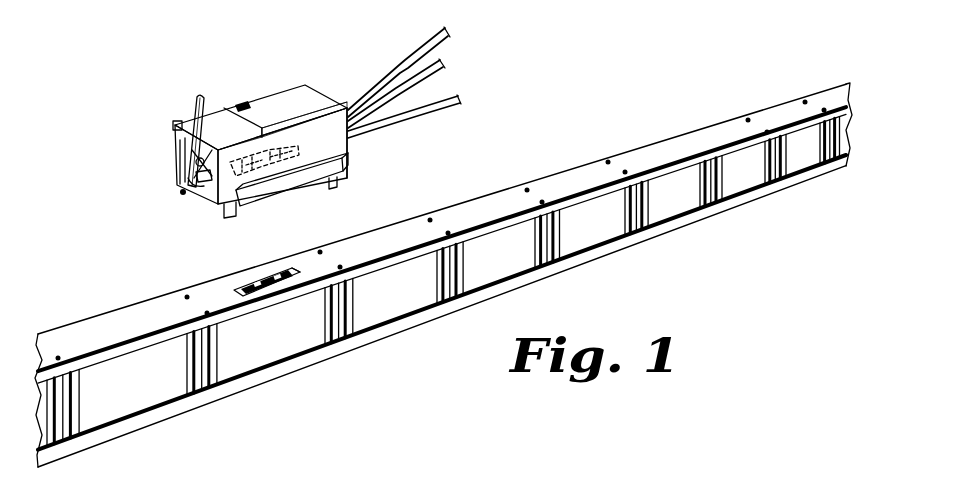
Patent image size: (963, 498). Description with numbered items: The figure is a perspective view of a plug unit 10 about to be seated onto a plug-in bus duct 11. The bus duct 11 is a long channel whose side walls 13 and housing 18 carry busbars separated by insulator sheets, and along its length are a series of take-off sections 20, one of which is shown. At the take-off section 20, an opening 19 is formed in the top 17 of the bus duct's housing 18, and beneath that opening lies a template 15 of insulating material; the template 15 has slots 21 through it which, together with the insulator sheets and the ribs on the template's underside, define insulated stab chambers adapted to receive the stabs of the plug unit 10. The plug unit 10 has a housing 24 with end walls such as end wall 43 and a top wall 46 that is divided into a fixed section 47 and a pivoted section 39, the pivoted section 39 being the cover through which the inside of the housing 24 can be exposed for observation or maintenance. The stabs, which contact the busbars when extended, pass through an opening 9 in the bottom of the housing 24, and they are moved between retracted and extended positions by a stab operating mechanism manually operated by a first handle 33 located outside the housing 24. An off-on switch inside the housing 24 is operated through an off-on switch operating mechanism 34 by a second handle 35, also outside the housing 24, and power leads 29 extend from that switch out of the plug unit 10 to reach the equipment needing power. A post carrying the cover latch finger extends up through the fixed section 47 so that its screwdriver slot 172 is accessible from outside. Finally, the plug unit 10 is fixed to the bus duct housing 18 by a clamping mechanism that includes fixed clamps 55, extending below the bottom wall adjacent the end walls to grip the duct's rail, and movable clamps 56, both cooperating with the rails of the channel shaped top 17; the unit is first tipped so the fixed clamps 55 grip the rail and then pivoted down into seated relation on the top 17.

The plug unit 10 is at (278, 50).
The screwdriver slot 172 is at (239, 127).
The pivoted section 39 is at (311, 92).
The fixed section 47 is at (218, 115).
The top wall 46 is at (283, 96).
The second handle 35 is at (202, 108).
The end wall 43 is at (178, 150).
The off-on switch operating mechanism 34 is at (174, 163).
The fixed clamp 55 is at (175, 198).
The movable clamp 56 is at (222, 219).
The take-off section 20 is at (271, 247).
The opening 9 is at (308, 188).
The first handle 33 is at (317, 168).
The housing 24 is at (349, 150).
The power leads 29 is at (458, 93).
The top 17 is at (473, 212).
The plug-in bus duct 11 is at (722, 232).
The side wall 13 is at (410, 298).
The housing 18 is at (530, 277).
The template 15 is at (300, 270).
The opening 19 is at (240, 286).
The slot 21 is at (240, 291).